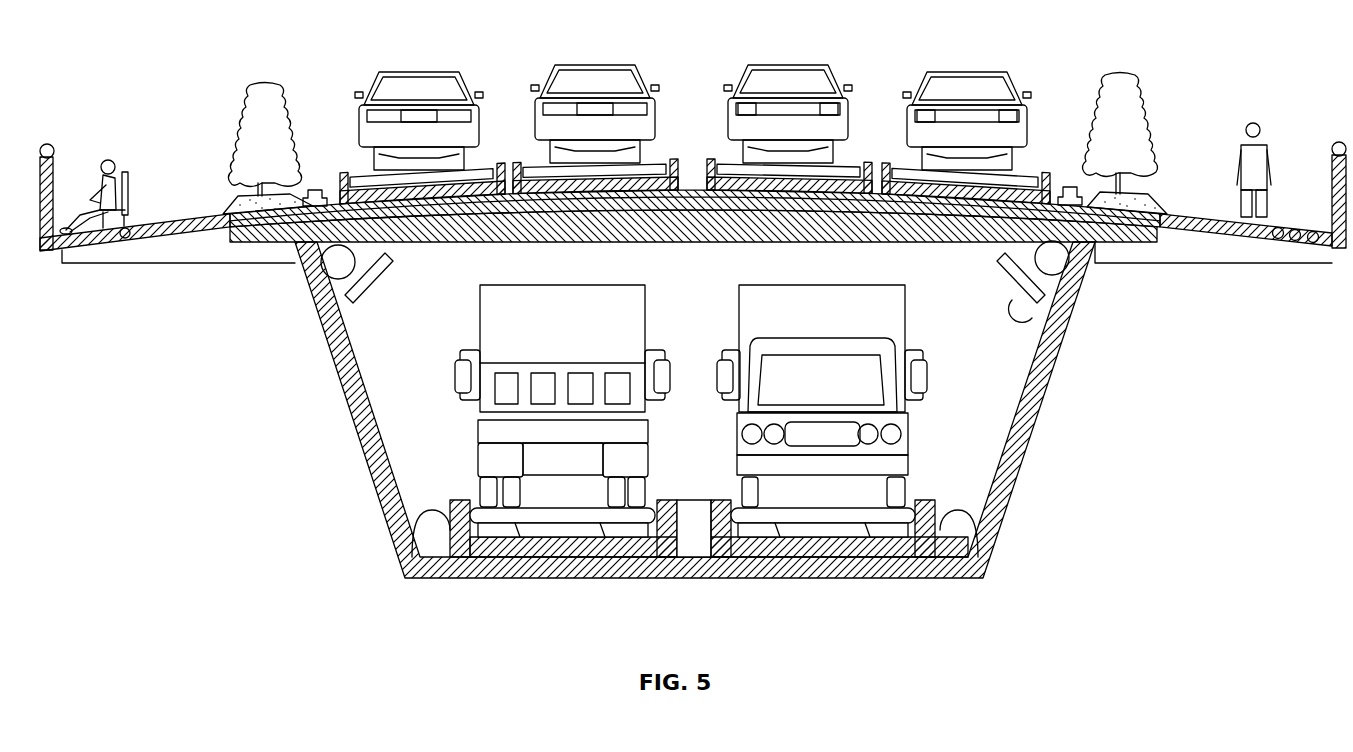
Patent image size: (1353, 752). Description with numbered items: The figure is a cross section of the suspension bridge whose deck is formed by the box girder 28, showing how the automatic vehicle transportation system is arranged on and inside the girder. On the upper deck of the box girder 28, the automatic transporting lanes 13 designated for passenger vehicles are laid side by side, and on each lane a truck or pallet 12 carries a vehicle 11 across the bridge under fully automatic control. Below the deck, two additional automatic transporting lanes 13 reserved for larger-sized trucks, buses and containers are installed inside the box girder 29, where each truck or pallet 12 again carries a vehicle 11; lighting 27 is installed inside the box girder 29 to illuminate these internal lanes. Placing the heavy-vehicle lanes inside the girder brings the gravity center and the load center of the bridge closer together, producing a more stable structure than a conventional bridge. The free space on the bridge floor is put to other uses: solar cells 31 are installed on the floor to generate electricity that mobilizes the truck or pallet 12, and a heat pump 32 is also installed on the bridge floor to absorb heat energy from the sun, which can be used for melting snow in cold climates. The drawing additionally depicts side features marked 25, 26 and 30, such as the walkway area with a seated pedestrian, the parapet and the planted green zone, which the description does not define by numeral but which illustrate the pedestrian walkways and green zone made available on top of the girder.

The vehicle 11 is at (455, 85).
The truck or pallet 12 is at (665, 160).
The automatic transporting lane 13 is at (878, 162).
The pedestrian on seat 25 is at (98, 183).
The railing post 26 is at (93, 222).
The lighting 27 is at (1023, 330).
The box girder 28 is at (1117, 260).
The box girder 29 is at (977, 487).
The trees 30 is at (275, 85).
The solar cell 31 is at (190, 222).
The heat pump 32 is at (127, 236).